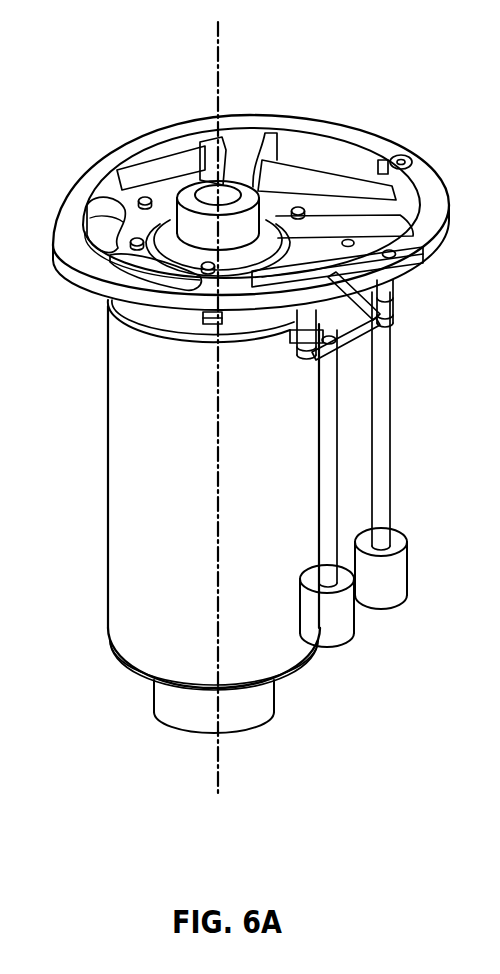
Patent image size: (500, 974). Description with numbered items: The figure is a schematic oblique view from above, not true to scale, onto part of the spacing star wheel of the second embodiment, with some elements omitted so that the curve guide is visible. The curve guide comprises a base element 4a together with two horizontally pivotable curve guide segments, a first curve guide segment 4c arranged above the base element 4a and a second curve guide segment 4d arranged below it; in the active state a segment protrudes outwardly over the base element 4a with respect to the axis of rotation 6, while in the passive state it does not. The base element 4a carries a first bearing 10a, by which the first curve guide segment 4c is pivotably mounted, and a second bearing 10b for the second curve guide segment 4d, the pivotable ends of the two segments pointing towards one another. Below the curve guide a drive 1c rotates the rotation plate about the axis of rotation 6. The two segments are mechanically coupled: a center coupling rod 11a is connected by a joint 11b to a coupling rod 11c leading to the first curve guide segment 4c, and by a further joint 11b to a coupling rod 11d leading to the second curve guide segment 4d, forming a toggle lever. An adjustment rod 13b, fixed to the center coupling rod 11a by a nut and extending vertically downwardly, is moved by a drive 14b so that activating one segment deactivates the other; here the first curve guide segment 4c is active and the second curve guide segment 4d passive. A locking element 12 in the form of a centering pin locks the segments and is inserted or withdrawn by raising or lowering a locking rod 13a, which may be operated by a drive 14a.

The axis of rotation 6 is at (222, 38).
The base element 4a is at (98, 296).
The first pivotable curve guide segment 4c is at (437, 207).
The second curve guide segment 4d is at (350, 232).
The first bearing 10a is at (410, 158).
The second bearing 10b is at (207, 324).
The drive 1c is at (253, 717).
The locking element 12 is at (418, 261).
The center coupling rod 11a is at (355, 347).
The joint 11b is at (302, 360).
The coupling rod 11c is at (297, 338).
The coupling rod 11d is at (397, 308).
The locking rod 13a is at (388, 462).
The adjustment rod 13b is at (319, 496).
The drive 14a is at (396, 568).
The drive 14b is at (335, 636).